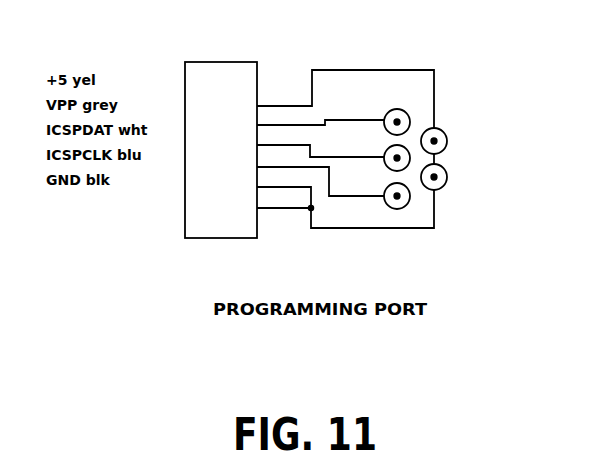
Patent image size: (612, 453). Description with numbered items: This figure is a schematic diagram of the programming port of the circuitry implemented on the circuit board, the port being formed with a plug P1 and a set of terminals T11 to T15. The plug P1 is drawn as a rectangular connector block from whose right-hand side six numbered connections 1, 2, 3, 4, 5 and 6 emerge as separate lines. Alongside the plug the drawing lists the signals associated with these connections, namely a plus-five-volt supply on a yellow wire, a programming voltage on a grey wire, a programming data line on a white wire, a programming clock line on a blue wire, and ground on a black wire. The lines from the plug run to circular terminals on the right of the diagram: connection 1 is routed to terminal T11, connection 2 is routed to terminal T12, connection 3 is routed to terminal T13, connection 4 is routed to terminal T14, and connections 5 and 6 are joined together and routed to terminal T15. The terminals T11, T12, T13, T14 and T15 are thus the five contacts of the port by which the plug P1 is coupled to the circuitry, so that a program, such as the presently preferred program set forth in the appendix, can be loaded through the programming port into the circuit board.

The plug P1 is at (221, 140).
The connector pin 1 (+5 yel) 1 is at (345, 99).
The connector pin 2 (VPP grey) 2 is at (320, 119).
The connector pin 3 (ICSPDAT wht) 3 is at (320, 145).
The connector pin 4 (ICSPCLK blu) 4 is at (320, 175).
The connector pin 5 (GND blk) 5 is at (345, 201).
The connector pin 6 (GND blk) 6 is at (285, 203).
The terminal T11 is at (453, 146).
The terminal T12 is at (378, 128).
The terminal T13 is at (378, 164).
The terminal T14 is at (378, 198).
The terminal T15 is at (453, 178).